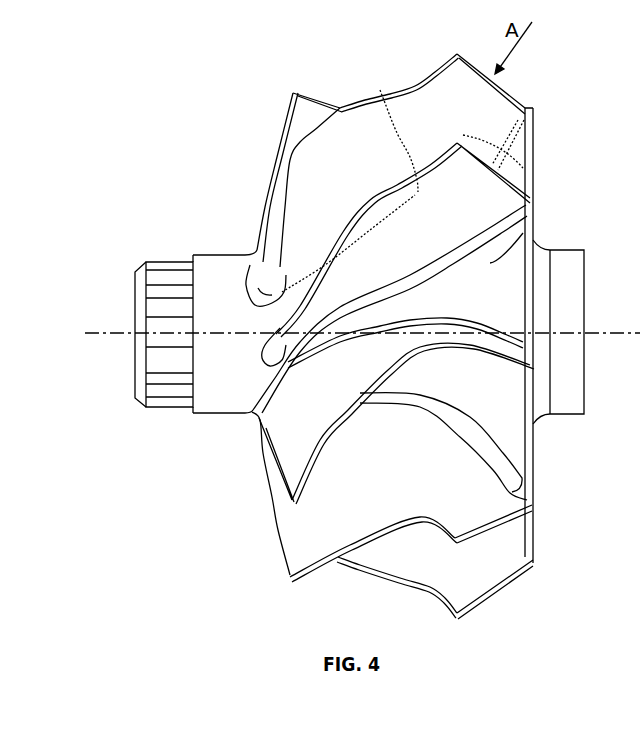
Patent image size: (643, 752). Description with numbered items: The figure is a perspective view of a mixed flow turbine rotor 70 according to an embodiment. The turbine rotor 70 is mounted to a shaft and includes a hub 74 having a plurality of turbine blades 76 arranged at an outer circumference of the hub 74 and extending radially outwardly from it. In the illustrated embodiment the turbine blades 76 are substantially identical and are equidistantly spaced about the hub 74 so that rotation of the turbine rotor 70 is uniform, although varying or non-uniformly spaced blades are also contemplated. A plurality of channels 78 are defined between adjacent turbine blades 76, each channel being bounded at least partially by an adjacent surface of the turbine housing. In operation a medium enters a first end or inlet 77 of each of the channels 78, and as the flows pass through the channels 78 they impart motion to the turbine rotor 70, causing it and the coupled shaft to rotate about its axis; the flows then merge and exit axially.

The turbine rotor 70 is at (215, 90).
The hub 74 is at (200, 345).
The turbine blades 76 is at (308, 105).
The inlet 77 is at (497, 110).
The channels 78 is at (535, 163).